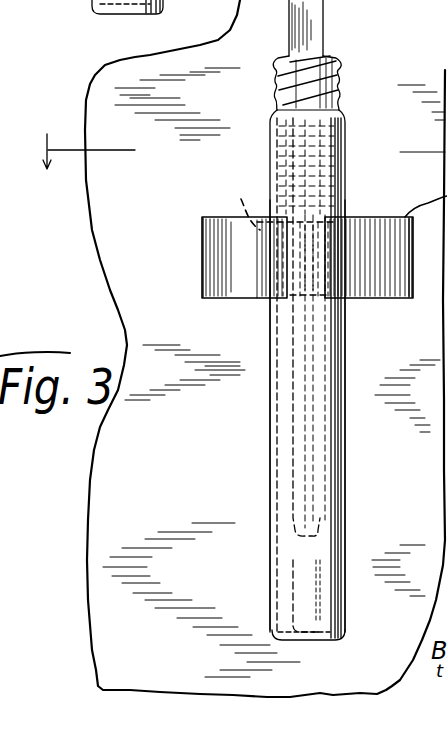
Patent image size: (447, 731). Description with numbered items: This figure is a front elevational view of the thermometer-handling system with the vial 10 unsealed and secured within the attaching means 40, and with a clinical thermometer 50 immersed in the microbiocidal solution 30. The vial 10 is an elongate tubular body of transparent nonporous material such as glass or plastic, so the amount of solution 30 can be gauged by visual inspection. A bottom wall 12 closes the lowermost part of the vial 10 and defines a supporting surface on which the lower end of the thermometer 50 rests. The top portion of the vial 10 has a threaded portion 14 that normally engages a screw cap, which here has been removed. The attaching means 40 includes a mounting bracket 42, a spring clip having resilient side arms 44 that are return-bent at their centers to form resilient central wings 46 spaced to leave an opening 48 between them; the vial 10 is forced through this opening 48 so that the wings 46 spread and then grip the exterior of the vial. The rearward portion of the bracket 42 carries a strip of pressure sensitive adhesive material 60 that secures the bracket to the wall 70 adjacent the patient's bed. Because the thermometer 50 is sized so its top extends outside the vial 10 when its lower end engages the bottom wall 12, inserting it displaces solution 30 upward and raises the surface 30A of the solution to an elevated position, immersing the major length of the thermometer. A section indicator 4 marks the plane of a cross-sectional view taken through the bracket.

The section line 4- 4 is at (73, 151).
The vial 10 is at (345, 492).
The bottom wall 12 is at (102, 16).
The threaded portion 14 is at (332, 90).
The microbiocidal solution 30 is at (318, 152).
The surface of the solution 30A is at (297, 122).
The attaching means 40 is at (206, 214).
The mounting bracket 42 is at (206, 285).
The resilient side arms 44 is at (210, 243).
The resilient central wings 46 is at (320, 244).
The opening 48 is at (310, 283).
The clinical thermometer 50 is at (312, 34).
The pressure sensitive adhesive strip 60 is at (238, 202).
The wall 70 is at (110, 98).